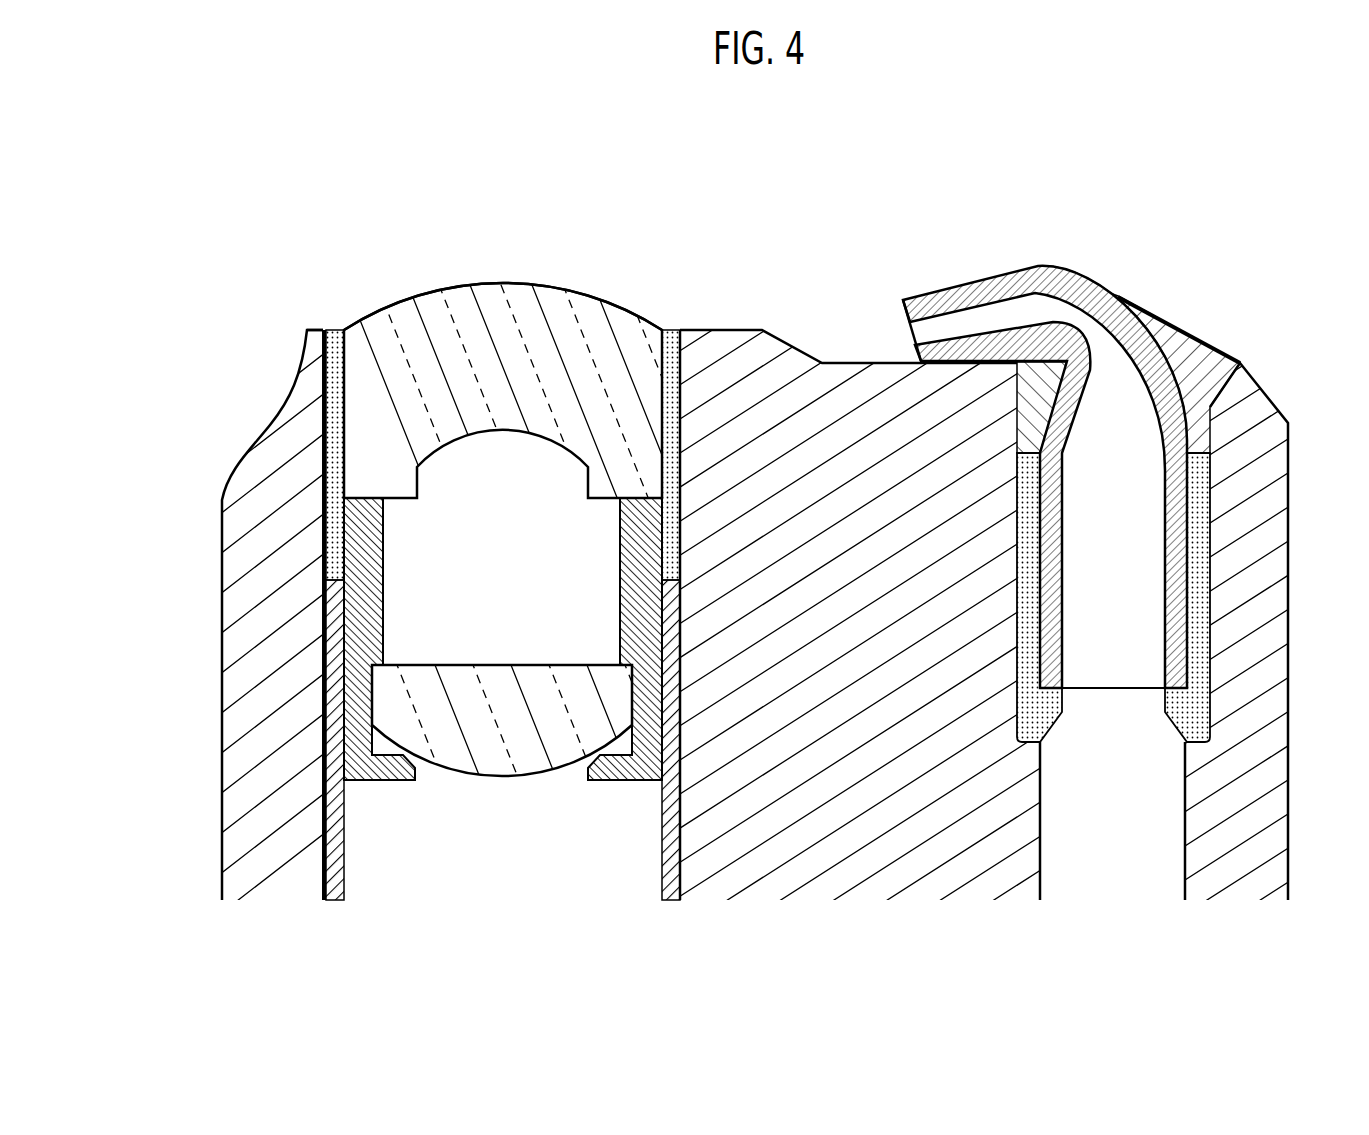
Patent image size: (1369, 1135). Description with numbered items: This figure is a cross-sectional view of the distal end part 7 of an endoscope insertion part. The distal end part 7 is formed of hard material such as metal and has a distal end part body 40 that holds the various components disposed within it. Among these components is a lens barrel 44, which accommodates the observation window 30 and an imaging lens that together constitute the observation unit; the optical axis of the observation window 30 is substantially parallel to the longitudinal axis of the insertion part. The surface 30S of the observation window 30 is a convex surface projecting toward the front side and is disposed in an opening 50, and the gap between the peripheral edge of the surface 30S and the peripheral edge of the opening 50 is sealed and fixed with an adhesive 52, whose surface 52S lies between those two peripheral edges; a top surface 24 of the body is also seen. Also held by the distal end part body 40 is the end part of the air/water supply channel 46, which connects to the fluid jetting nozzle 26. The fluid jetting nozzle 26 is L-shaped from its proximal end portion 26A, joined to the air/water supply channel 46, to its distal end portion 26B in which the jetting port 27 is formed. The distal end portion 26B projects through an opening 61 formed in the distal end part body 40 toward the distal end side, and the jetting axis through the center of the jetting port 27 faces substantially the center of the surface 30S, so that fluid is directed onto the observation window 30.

The distal end part 7 is at (236, 153).
The upper surface of holder body 24 is at (785, 336).
The fluid jetting nozzle 26 is at (1030, 468).
The proximal end portion 26A is at (1134, 559).
The distal end portion 26B is at (1038, 254).
The jetting port 27 is at (906, 336).
The observation window 30 is at (434, 300).
The surface of the observation window 30S is at (503, 290).
The distal end part body 40 is at (276, 893).
The lens barrel 44 is at (309, 621).
The air/water supply channel 46 is at (1125, 828).
The opening 50 is at (316, 330).
The adhesive 52 is at (356, 537).
The surface of the adhesive 52S is at (345, 330).
The opening 61 is at (1243, 362).